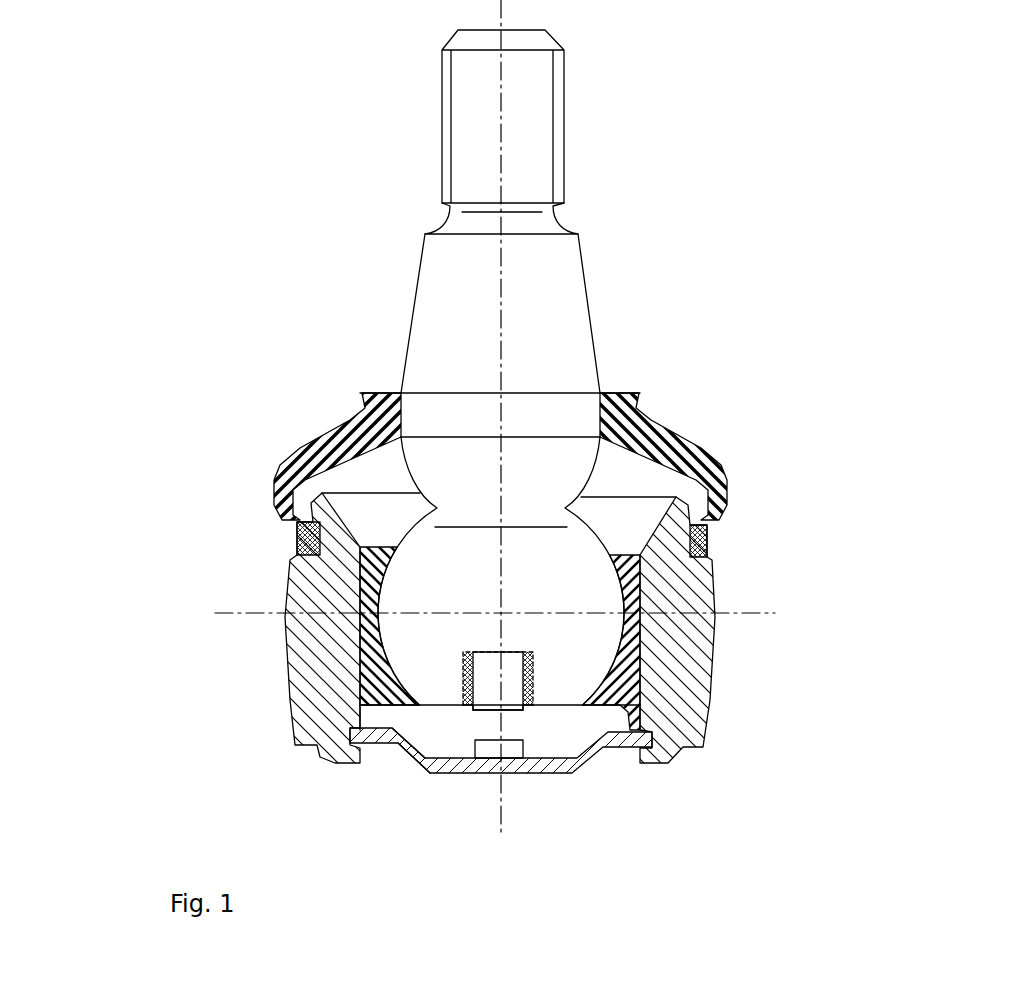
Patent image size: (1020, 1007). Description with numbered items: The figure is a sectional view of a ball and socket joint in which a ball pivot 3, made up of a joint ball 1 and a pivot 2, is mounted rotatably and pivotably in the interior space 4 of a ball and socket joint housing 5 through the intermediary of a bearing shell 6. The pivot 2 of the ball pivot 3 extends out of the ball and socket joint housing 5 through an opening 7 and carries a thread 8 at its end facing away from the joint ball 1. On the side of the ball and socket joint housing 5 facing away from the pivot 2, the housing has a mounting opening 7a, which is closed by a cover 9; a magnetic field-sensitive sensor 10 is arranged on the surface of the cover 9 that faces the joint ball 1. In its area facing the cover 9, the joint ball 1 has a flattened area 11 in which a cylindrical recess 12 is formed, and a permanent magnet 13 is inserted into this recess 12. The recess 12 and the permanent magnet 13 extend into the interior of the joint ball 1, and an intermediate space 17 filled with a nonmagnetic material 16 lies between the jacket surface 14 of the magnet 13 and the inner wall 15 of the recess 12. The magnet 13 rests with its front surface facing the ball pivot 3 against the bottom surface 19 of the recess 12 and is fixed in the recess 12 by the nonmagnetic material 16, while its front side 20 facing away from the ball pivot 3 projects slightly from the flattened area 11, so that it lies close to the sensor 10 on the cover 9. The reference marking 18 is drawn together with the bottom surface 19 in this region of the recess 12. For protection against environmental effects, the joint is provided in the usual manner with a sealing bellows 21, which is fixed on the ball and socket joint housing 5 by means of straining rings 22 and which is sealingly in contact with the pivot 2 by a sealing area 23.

The joint ball 1 is at (580, 585).
The pivot 2 is at (560, 340).
The ball pivot 3 is at (423, 245).
The interior space 4 is at (293, 628).
The ball and socket joint housing 5 is at (700, 630).
The bearing shell 6 is at (630, 600).
The opening 7 is at (390, 515).
The mounting opening 7a is at (532, 740).
The thread 8 is at (557, 137).
The cover 9 is at (395, 740).
The magnetic field-sensitive sensor 10 is at (484, 746).
The flattened area 11 is at (428, 718).
The cylindrical recess 12 is at (467, 707).
The permanent magnet 13 is at (533, 708).
The jacket surface 14 is at (463, 680).
The inner wall 15 is at (472, 659).
The nonmagnetic material 16 is at (685, 718).
The intermediate space 17 is at (535, 681).
The sensor connection 18 is at (311, 624).
The bottom surface 19 is at (470, 650).
The front side 20 is at (515, 712).
The sealing bellows 21 is at (673, 440).
The straining rings 22 is at (297, 528).
The sealing area 23 is at (373, 393).